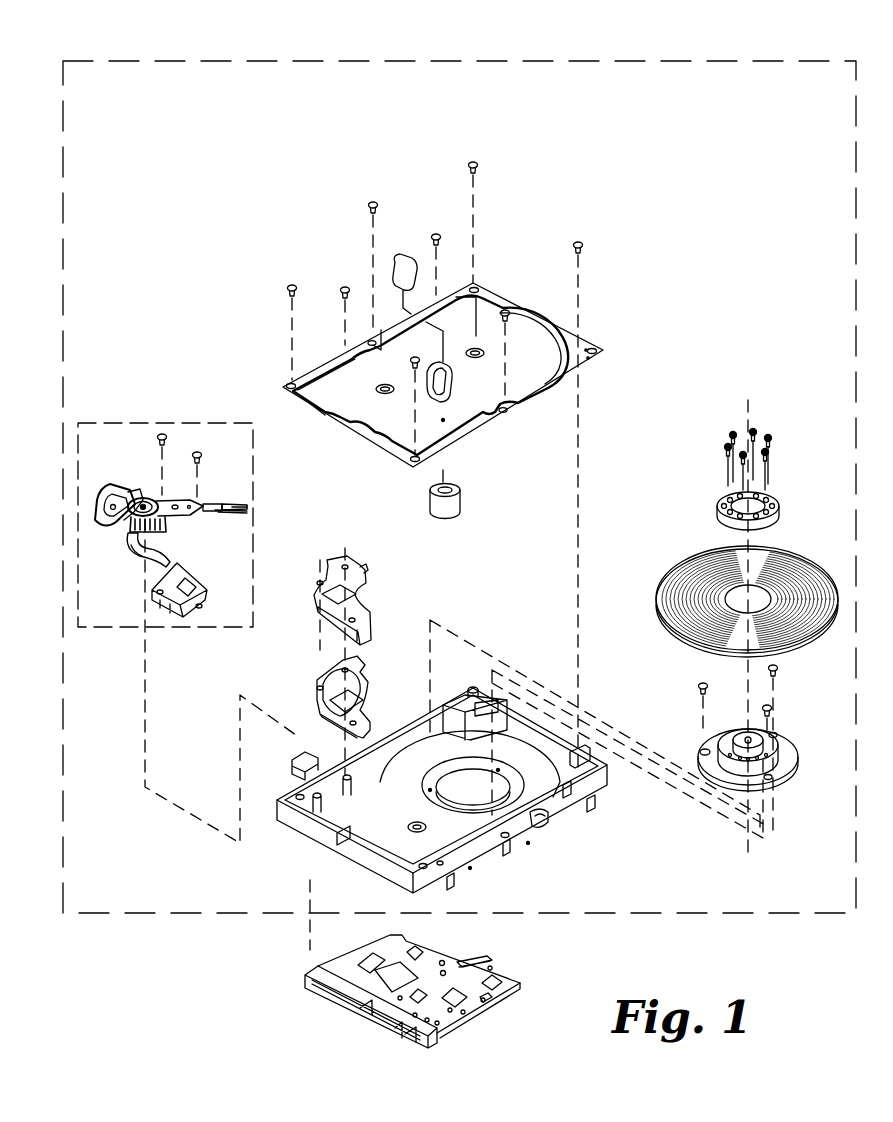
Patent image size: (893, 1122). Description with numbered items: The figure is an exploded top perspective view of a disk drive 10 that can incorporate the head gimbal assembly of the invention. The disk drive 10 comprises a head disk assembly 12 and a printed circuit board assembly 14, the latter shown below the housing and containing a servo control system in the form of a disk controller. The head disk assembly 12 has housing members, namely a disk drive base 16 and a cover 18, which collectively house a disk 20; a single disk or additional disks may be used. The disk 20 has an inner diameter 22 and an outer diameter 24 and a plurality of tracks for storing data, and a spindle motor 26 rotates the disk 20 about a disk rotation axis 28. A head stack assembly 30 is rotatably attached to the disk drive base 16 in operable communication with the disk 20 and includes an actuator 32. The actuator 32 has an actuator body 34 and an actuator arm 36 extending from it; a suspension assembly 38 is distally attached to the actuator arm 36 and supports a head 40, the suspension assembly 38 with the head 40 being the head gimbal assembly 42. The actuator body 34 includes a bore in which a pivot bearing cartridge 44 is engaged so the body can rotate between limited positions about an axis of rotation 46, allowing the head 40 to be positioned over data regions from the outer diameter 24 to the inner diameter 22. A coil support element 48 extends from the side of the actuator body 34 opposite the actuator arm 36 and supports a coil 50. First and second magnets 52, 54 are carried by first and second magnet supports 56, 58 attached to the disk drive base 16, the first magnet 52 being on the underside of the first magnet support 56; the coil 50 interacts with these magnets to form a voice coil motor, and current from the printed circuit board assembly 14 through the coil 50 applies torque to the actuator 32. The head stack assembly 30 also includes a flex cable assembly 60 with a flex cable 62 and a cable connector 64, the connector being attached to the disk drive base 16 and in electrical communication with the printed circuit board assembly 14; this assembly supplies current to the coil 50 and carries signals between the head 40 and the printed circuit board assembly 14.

The disk drive 10 is at (229, 40).
The head disk assembly 12 is at (348, 60).
The printed circuit board assembly 14 is at (504, 997).
The disk drive base 16 is at (488, 862).
The cover 18 is at (528, 380).
The disk 20 is at (690, 565).
The inner diameter 22 is at (737, 602).
The outer diameter 24 is at (668, 622).
The spindle motor 26 is at (802, 800).
The disk rotation axis 28 is at (746, 845).
The head stack assembly 30 is at (177, 423).
The actuator 32 is at (134, 494).
The actuator body 34 is at (130, 498).
The actuator arm 36 is at (166, 499).
The suspension assembly 38 is at (216, 490).
The head 40 is at (250, 492).
The head gimbal assembly 42 is at (250, 532).
The pivot bearing cartridge 44 is at (144, 500).
The axis of rotation 46 is at (160, 664).
The coil support element 48 is at (94, 503).
The coil 50 is at (106, 486).
The first magnet 52 is at (375, 592).
The second magnet 54 is at (358, 675).
The first magnet support 56 is at (332, 601).
The second magnet support 58 is at (368, 708).
The flex cable assembly 60 is at (135, 558).
The flex cable 62 is at (128, 550).
The cable connector 64 is at (203, 598).